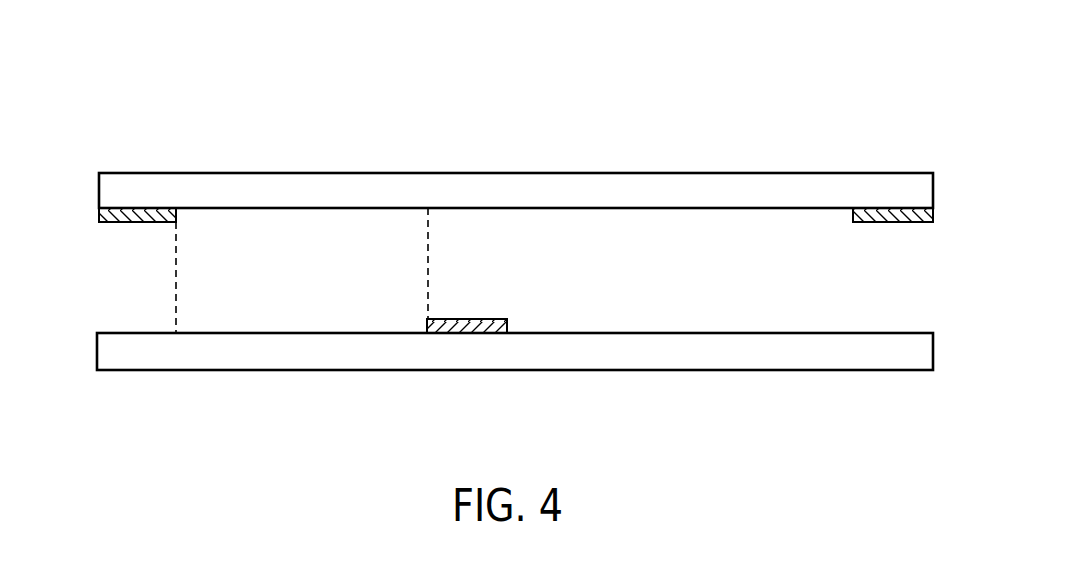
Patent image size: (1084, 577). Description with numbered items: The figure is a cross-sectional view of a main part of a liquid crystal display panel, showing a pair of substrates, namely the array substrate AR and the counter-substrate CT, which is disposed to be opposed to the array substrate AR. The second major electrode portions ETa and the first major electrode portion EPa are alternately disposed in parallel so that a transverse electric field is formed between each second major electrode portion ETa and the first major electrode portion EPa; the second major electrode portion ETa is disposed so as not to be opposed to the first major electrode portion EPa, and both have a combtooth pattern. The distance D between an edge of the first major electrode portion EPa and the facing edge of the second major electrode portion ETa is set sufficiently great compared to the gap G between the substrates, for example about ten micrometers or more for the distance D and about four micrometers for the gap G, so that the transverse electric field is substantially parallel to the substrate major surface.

The counter-substrate CT is at (593, 173).
The array substrate AR is at (550, 373).
The second major electrode portion ETa is at (143, 218).
The first major electrode portion EPa is at (462, 326).
The distance D is at (428, 271).
The gap G is at (703, 208).